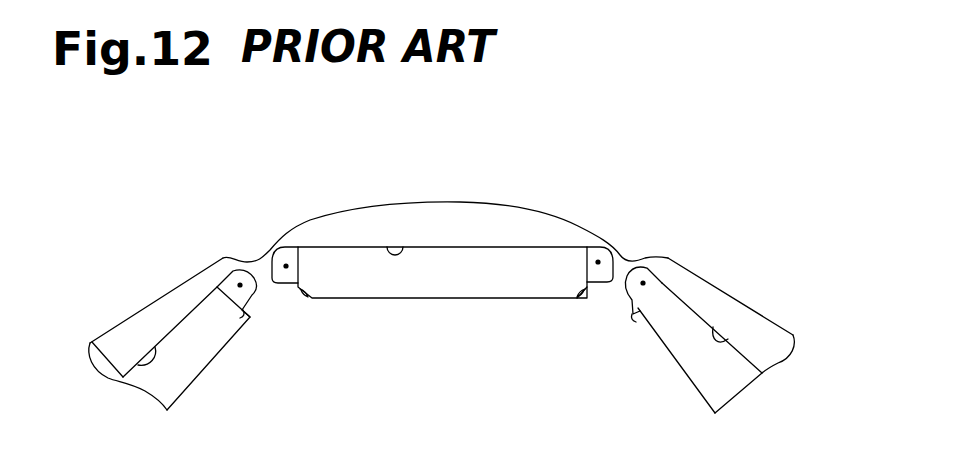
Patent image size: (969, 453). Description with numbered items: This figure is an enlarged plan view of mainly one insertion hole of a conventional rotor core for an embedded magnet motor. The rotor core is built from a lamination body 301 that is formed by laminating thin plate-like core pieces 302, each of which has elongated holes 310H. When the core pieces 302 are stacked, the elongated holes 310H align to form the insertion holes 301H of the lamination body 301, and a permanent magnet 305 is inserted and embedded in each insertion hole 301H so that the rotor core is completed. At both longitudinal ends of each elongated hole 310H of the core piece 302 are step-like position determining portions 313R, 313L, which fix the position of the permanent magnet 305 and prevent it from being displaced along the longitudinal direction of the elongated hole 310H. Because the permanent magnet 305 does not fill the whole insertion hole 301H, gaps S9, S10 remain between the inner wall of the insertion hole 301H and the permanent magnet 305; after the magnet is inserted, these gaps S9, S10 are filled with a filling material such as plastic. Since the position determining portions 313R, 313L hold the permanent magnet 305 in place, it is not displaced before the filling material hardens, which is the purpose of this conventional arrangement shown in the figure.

The core piece 302 is at (565, 222).
The lamination body 301 is at (453, 209).
The insertion hole 301H is at (467, 285).
The elongated hole 310H is at (403, 244).
The permanent magnet 305 is at (182, 358).
The gap S9 is at (286, 263).
The gap S10 is at (240, 282).
The position determining portion 313L is at (306, 301).
The position determining portion 313R is at (574, 296).